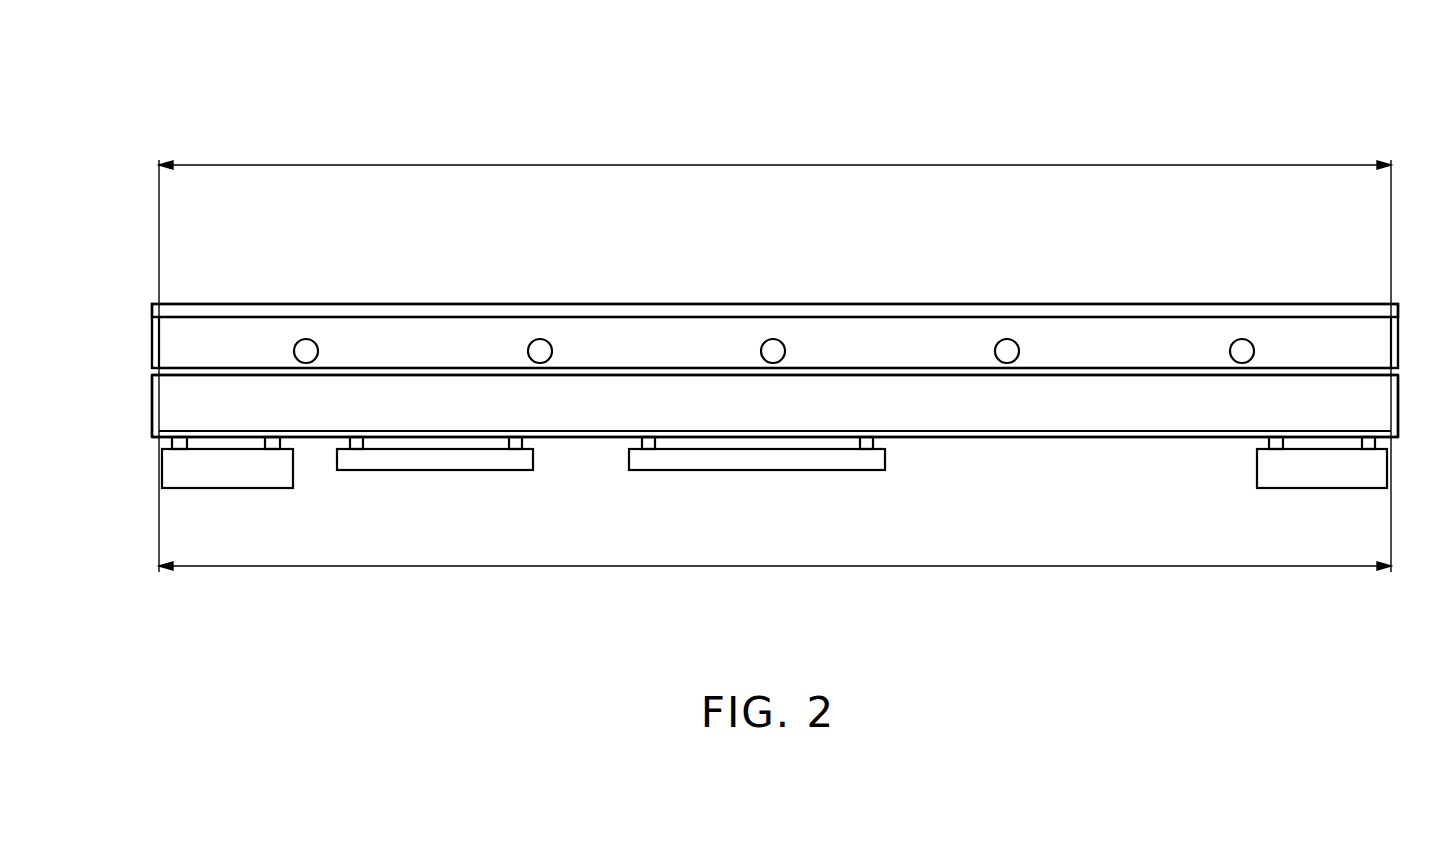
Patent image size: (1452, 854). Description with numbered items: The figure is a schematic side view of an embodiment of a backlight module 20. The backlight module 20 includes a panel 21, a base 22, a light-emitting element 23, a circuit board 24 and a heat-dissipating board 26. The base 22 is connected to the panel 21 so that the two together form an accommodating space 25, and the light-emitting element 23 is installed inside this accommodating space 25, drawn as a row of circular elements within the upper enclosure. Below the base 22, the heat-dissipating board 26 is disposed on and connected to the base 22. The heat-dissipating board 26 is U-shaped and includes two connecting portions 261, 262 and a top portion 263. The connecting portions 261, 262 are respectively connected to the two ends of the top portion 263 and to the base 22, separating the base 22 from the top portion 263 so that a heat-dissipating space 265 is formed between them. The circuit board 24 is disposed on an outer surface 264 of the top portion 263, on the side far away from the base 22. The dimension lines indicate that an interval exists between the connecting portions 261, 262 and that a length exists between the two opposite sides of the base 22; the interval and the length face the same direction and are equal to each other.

The backlight module 20 is at (168, 94).
The panel 21 is at (1303, 308).
The base 22 is at (1400, 324).
The light-emitting element 23 is at (540, 350).
The circuit board 24 is at (222, 474).
The accommodating space 25 is at (644, 335).
The heat-dissipating board 26 is at (148, 383).
The connecting portion 261 is at (150, 403).
The connecting portion 262 is at (1392, 403).
The top portion 263 is at (1080, 438).
The outer surface 264 is at (1178, 438).
The heat-dissipating space 265 is at (965, 407).